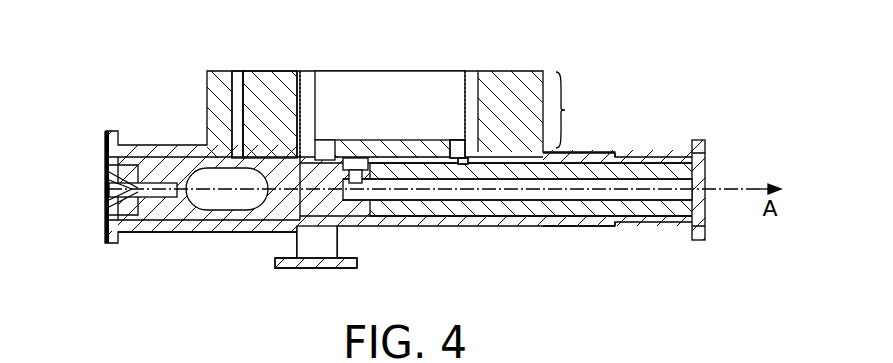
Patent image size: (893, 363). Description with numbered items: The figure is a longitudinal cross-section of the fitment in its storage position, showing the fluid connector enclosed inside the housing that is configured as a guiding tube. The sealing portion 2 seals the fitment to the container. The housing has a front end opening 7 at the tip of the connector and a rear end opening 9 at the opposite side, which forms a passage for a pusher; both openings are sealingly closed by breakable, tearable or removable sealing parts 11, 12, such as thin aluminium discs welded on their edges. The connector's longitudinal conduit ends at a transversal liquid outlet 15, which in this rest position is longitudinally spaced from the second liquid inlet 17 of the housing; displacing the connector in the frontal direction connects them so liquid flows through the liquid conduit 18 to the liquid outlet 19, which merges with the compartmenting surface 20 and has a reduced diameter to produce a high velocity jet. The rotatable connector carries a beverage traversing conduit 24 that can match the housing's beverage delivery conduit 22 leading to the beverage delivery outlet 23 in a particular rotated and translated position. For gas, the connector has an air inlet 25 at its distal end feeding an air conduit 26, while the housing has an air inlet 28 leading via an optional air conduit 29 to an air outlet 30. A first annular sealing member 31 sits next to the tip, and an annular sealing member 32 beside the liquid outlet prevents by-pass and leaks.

The sealing portion 2 is at (446, 181).
The front end opening 7 is at (685, 160).
The rear end opening 9 is at (122, 150).
The sealing part 11 is at (707, 167).
The sealing part 12 is at (107, 163).
The liquid outlet 15 is at (352, 158).
The second liquid inlet 17 is at (477, 112).
The liquid conduit 18 is at (457, 149).
The liquid outlet 19 is at (463, 161).
The compartmenting surface 20 is at (287, 72).
The beverage delivery conduit 22 is at (327, 157).
The beverage delivery outlet 23 is at (313, 257).
The beverage traversing conduit 24 is at (207, 208).
The air inlet 25 is at (110, 203).
The air conduit 26 is at (157, 187).
The air inlet 28 is at (242, 132).
The air conduit 29 is at (236, 93).
The air outlet 30 is at (238, 95).
The first annular sealing member 31 is at (360, 230).
The annular sealing member 32 is at (342, 230).